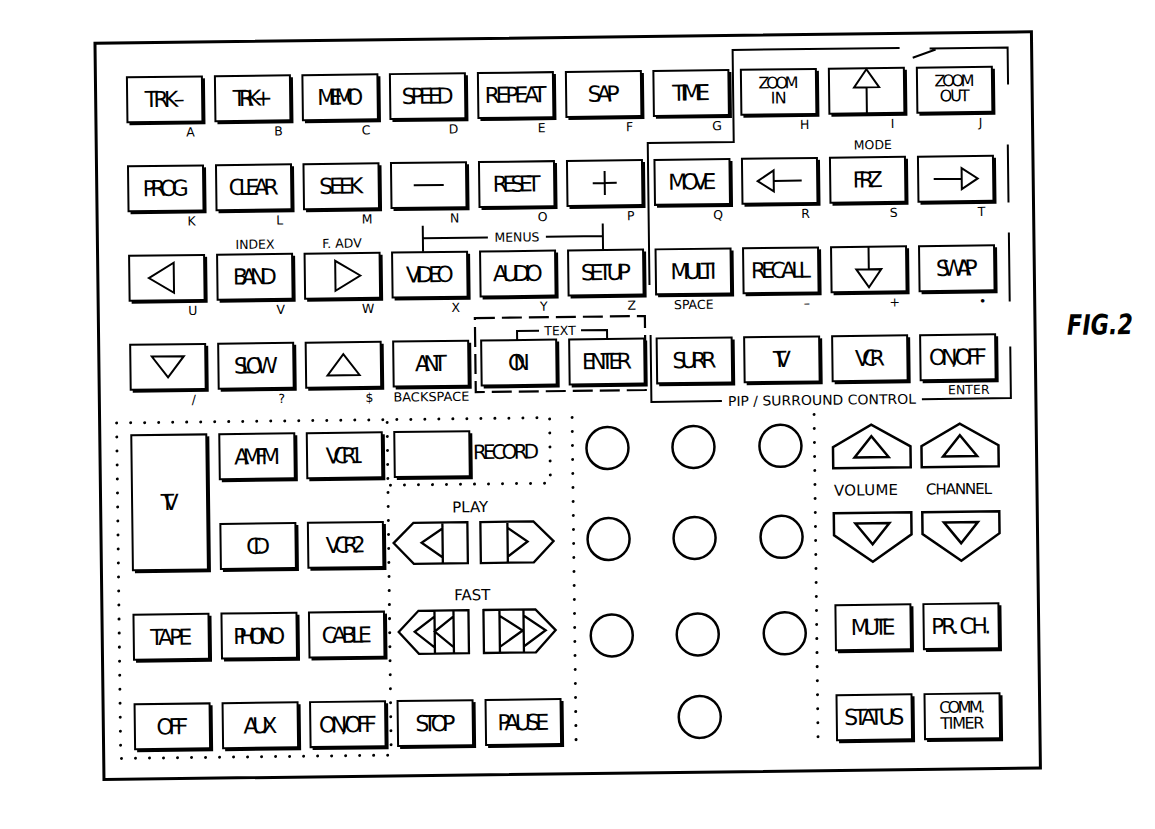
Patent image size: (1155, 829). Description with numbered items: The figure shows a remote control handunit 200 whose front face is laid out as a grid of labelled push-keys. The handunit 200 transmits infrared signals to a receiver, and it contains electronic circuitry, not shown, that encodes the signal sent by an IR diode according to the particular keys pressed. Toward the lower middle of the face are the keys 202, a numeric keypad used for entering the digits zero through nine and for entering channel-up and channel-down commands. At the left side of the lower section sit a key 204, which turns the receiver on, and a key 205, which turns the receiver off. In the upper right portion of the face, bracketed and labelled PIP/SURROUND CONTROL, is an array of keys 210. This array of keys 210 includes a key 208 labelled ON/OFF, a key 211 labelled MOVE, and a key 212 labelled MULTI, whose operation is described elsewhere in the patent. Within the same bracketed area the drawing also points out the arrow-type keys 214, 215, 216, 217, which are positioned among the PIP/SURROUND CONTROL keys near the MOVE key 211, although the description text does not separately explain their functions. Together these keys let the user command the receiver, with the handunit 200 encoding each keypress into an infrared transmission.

The remote control handunit 200 is at (1036, 501).
The keys 202 is at (752, 728).
The key 204 is at (206, 566).
The key 205 is at (139, 698).
The key 208 is at (983, 338).
The array of keys 210 is at (1012, 62).
The key 211 is at (728, 160).
The key 212 is at (712, 250).
The MODE key (up arrow) 214 is at (854, 114).
The right arrow key 215 is at (956, 207).
The down arrow key 216 is at (889, 249).
The left arrow key 217 is at (784, 210).